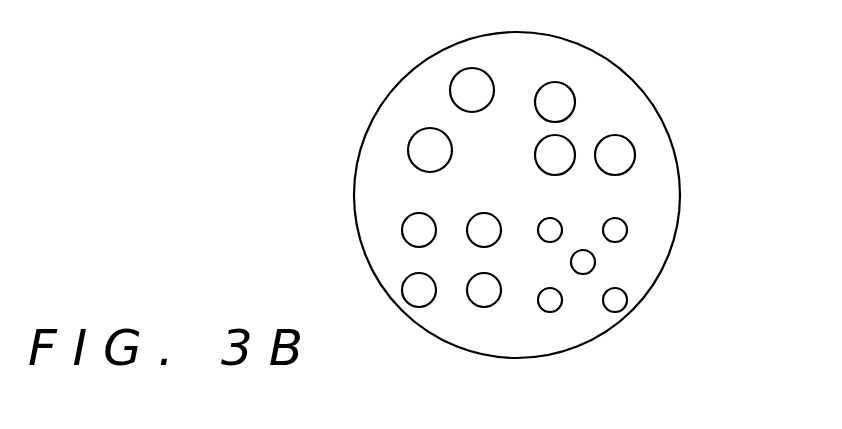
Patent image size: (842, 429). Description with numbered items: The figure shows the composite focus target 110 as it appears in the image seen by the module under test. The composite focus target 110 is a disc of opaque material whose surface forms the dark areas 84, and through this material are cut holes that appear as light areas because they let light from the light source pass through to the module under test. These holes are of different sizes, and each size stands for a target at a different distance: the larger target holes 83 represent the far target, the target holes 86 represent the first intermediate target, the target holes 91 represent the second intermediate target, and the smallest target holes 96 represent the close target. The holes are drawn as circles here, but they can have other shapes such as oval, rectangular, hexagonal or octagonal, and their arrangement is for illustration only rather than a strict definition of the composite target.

The composite focus target 110 is at (670, 131).
The larger target holes 83 is at (470, 90).
The dark areas 84 is at (386, 190).
The target holes 86 is at (553, 102).
The target holes 91 is at (419, 290).
The smallest target holes 96 is at (615, 300).